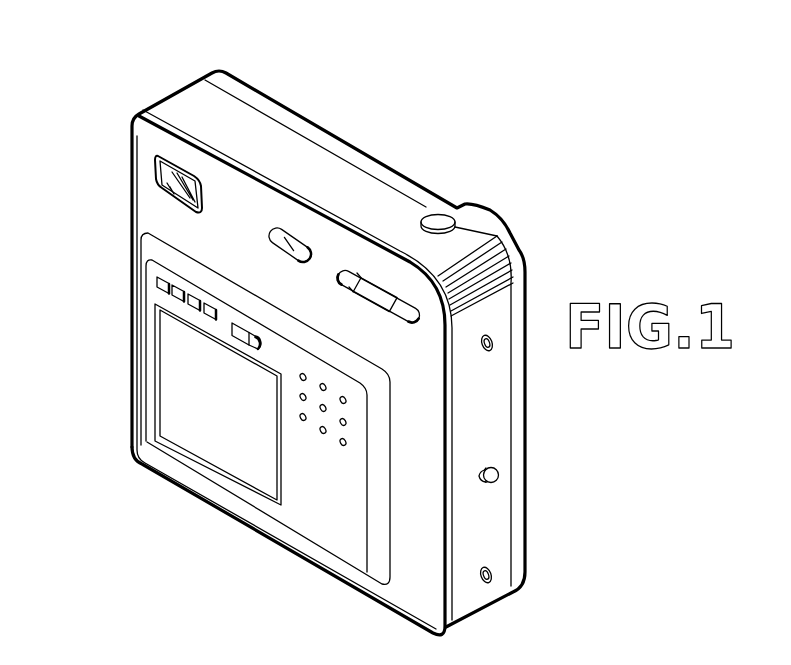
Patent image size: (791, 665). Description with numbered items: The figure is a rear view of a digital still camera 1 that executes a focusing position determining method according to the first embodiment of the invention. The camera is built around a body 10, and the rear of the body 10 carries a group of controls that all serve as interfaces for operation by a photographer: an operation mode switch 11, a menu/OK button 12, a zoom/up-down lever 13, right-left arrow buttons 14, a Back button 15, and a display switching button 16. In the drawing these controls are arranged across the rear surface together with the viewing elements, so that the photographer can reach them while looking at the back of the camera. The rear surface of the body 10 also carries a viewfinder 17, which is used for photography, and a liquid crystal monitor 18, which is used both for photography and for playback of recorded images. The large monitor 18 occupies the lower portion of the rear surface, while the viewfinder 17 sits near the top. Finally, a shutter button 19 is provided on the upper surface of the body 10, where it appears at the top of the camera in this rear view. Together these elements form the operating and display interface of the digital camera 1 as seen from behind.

The digital still camera 1 is at (355, 48).
The body 10 is at (340, 137).
The operation mode switch 11 is at (232, 350).
The menu/OK button 12 is at (194, 316).
The zoom/up-down lever 13 is at (380, 290).
The right-left arrow buttons 14 is at (357, 273).
The Back button 15 is at (158, 306).
The display switching button 16 is at (156, 280).
The viewfinder 17 is at (154, 167).
The liquid crystal monitor 18 is at (180, 415).
The shutter button 19 is at (443, 220).